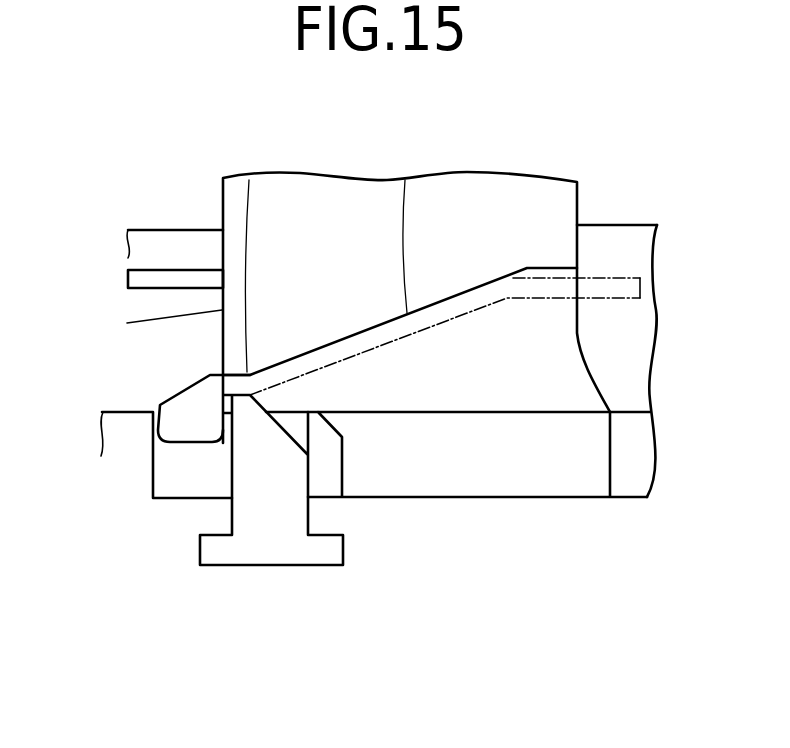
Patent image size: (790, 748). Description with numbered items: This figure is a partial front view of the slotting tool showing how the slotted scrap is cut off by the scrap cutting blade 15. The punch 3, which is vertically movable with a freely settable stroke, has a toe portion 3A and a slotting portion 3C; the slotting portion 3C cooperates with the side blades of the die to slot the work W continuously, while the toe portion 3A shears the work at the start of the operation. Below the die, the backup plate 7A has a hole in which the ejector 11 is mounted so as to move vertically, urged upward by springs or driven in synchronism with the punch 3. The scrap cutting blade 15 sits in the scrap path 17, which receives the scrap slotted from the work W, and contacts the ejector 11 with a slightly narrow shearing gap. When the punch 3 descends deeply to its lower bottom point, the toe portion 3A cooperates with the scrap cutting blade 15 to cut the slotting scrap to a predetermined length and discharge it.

The punch 3 is at (362, 283).
The toe portion 3A is at (249, 180).
The slotting portion 3C is at (405, 180).
The scrap path 17 is at (137, 245).
The scrap cutting blade 15 is at (184, 390).
The ejector 11 is at (327, 550).
The backup plate 7A is at (564, 487).
The wafer W is at (640, 287).